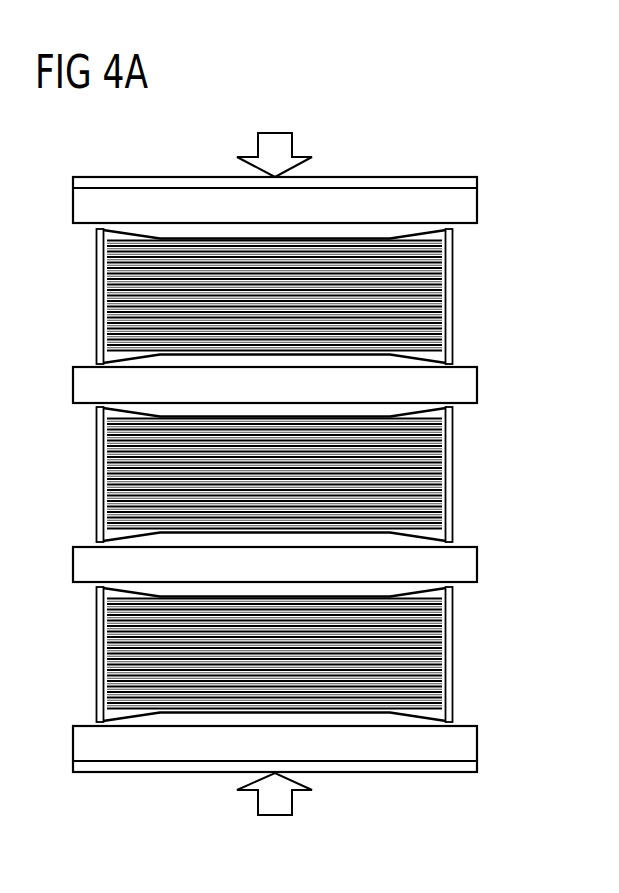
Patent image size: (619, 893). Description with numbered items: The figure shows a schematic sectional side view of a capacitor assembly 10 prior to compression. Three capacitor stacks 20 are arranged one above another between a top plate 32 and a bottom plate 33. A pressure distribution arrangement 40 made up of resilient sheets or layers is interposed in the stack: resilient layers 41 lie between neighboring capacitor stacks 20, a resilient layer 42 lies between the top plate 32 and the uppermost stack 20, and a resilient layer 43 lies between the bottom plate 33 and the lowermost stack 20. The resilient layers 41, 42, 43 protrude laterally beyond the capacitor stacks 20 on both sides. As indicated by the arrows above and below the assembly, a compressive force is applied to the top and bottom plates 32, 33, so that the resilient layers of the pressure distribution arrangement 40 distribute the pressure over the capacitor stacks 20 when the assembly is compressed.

The capacitor assembly 10 is at (423, 144).
The capacitor stack 20 is at (100, 271).
The top plate 32 is at (368, 186).
The bottom plate 33 is at (385, 772).
The pressure distribution arrangement 40 is at (269, 478).
The resilient sheet or layer 41 is at (73, 384).
The resilient sheet or layer 42 is at (244, 172).
The resilient sheet or layer 43 is at (243, 780).